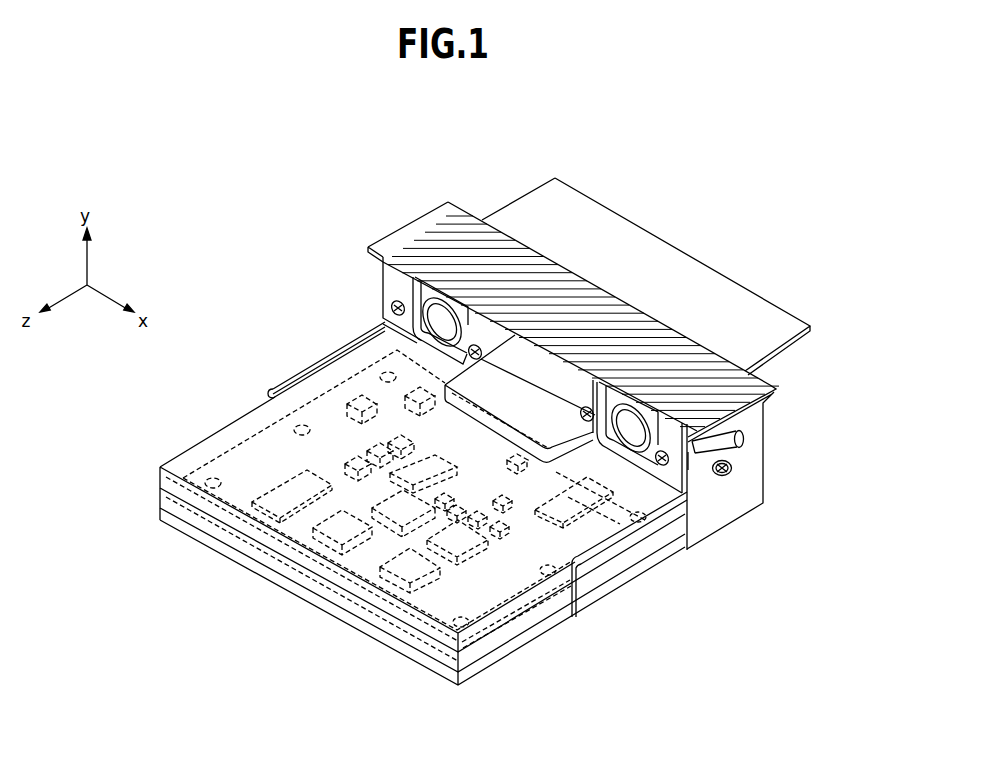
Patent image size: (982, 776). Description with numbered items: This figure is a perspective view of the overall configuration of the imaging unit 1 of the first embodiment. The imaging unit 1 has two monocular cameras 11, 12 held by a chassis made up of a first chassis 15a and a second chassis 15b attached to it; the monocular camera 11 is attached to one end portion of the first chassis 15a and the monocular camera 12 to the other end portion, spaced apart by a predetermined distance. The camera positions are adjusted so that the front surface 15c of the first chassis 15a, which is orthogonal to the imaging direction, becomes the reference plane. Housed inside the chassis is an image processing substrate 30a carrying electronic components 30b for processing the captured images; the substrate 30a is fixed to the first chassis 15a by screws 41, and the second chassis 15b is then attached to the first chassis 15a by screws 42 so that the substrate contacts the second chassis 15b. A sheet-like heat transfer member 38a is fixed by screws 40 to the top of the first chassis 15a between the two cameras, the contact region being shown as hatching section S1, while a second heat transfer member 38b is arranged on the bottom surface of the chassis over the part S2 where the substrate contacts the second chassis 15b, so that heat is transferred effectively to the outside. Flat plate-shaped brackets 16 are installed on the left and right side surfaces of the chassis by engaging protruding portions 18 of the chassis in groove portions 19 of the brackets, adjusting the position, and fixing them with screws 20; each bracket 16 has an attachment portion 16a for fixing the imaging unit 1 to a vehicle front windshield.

The imaging unit 1 is at (175, 181).
The monocular camera 11 is at (398, 343).
The monocular camera 12 is at (650, 470).
The first chassis 15a is at (193, 495).
The second chassis 15b is at (242, 547).
The front surface 15c is at (383, 318).
The bracket 16 is at (303, 372).
The attachment portion 16a is at (452, 210).
The protruding portion 18 is at (747, 445).
The groove portion 19 is at (690, 460).
The screw 20 is at (734, 467).
The image processing substrate 30a is at (417, 608).
The electronic component 30b is at (378, 576).
The heat transfer member 38a is at (660, 245).
The heat transfer member 38b is at (300, 595).
The screw 40 is at (400, 302).
The screw 41 is at (552, 576).
The screw 42 is at (640, 523).
The hatching section S1 is at (592, 300).
The part S2 is at (335, 592).